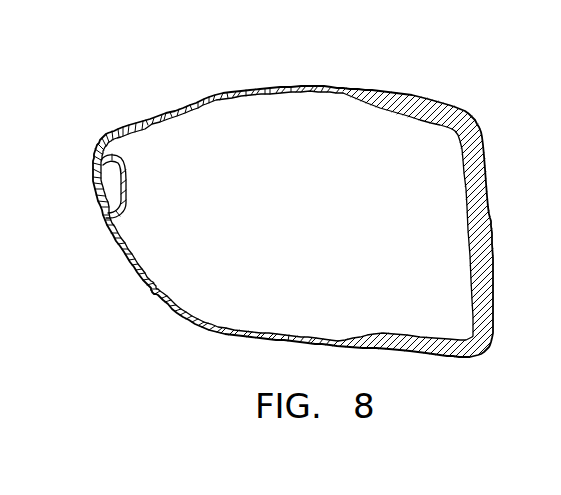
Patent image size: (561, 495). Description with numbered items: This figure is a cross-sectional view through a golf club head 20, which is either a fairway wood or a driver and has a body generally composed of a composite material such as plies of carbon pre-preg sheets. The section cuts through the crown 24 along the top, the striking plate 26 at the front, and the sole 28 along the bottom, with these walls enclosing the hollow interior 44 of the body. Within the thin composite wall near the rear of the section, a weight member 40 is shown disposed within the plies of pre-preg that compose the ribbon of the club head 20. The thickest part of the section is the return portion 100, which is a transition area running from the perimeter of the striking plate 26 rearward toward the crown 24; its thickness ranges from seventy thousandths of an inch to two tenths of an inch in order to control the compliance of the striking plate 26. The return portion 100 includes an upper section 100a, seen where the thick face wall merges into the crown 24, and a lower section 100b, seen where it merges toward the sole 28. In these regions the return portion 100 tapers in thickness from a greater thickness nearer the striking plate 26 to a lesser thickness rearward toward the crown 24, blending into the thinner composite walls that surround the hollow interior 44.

The golf club head 20 is at (490, 108).
The crown 24 is at (219, 96).
The striking plate 26 is at (493, 242).
The sole 28 is at (146, 304).
The weight member 40 is at (112, 184).
The hollow interior 44 is at (277, 213).
The return portion 100 is at (444, 102).
The upper section 100a is at (396, 120).
The lower section 100b is at (392, 327).